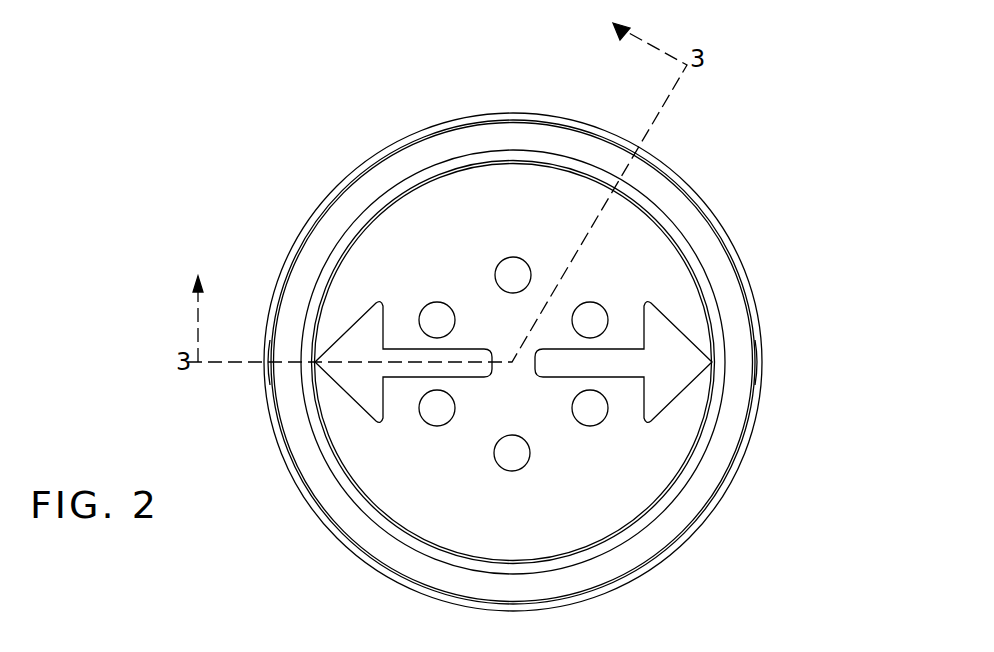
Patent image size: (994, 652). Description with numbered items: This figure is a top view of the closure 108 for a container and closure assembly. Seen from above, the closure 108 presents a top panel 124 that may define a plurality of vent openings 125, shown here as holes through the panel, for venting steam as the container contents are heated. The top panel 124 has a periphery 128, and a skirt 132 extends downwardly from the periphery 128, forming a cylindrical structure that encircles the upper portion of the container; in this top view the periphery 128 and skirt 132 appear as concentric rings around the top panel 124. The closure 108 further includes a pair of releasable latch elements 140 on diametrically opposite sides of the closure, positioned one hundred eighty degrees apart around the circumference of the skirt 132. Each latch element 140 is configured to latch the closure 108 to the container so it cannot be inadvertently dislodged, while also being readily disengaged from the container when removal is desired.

The closure 108 is at (705, 202).
The top panel 124 is at (652, 270).
The vent openings 125 is at (518, 456).
The periphery 128 is at (352, 188).
The skirt 132 is at (333, 198).
The releasable latch elements 140 is at (760, 360).